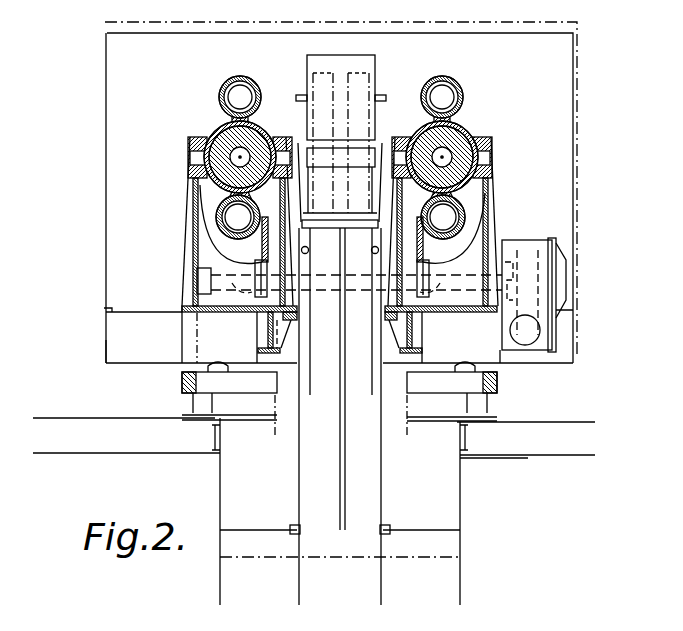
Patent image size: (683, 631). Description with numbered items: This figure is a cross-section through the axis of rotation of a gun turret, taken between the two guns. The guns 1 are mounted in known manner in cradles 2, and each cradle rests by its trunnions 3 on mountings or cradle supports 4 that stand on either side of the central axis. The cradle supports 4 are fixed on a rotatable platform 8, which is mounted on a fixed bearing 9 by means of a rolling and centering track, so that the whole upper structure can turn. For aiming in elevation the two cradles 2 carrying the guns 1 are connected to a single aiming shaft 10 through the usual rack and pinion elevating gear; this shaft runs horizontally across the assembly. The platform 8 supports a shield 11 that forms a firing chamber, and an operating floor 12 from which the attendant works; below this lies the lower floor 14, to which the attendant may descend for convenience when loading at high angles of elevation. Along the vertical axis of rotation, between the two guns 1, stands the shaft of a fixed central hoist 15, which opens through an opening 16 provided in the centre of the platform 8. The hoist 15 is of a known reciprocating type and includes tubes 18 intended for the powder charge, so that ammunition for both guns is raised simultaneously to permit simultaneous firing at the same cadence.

The guns 1 is at (252, 140).
The cradles 2 is at (220, 130).
The trunnions 3 is at (192, 160).
The cradle supports 4 is at (190, 223).
The rotatable platform 8 is at (183, 334).
The fixed bearing 9 is at (221, 403).
The aiming shaft 10 is at (210, 288).
The shield 11 is at (108, 99).
The operating floor 12 is at (135, 312).
The lower floor 14 is at (147, 362).
The fixed central hoist 15 is at (376, 492).
The opening 16 is at (292, 345).
The tubes 18 is at (328, 373).